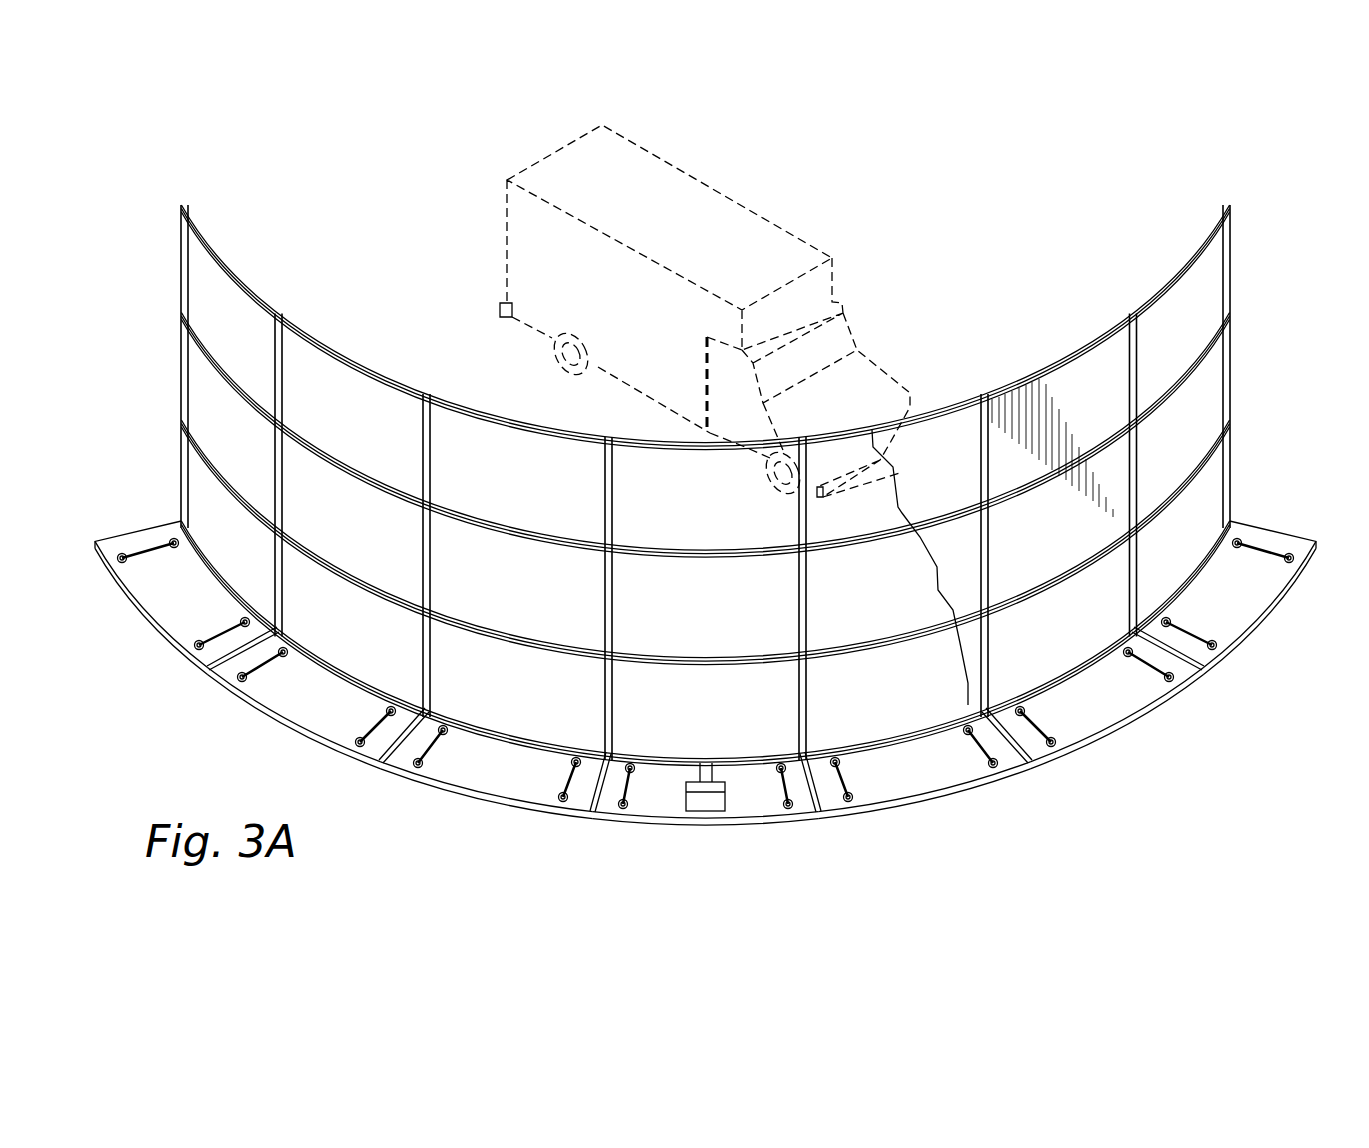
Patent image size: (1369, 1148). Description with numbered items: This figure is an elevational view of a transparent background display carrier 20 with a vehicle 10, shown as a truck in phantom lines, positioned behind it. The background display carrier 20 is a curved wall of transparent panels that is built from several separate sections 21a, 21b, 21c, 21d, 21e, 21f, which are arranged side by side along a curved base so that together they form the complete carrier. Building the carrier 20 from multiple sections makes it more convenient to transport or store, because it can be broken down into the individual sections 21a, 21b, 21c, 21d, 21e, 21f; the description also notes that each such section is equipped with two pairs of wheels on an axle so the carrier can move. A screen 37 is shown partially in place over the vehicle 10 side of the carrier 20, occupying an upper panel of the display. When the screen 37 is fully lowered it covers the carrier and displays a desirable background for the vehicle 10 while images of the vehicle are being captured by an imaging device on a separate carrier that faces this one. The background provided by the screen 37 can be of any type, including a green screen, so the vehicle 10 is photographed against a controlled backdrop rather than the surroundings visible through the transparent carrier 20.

The vehicle 10 is at (722, 192).
The background display carrier 20 is at (174, 242).
The section 21a is at (1264, 628).
The section 21b is at (1122, 735).
The section 21c is at (938, 802).
The section 21d is at (456, 800).
The section 21e is at (266, 716).
The section 21f is at (130, 615).
The screen 37 is at (1054, 545).